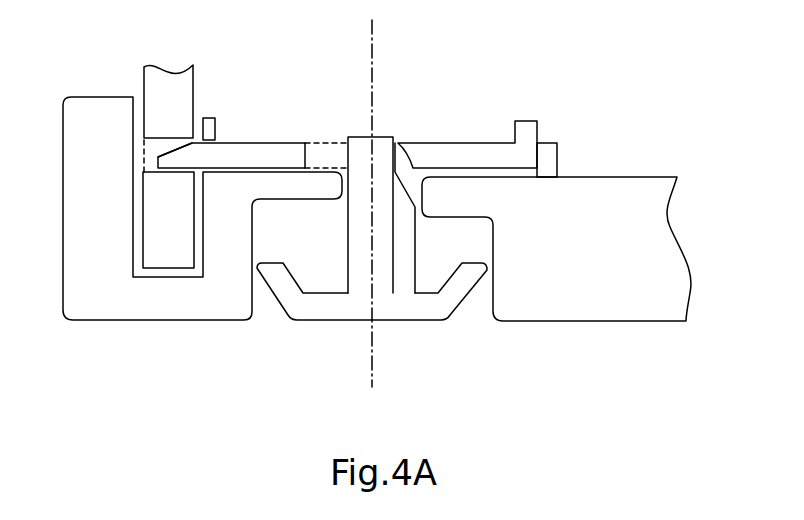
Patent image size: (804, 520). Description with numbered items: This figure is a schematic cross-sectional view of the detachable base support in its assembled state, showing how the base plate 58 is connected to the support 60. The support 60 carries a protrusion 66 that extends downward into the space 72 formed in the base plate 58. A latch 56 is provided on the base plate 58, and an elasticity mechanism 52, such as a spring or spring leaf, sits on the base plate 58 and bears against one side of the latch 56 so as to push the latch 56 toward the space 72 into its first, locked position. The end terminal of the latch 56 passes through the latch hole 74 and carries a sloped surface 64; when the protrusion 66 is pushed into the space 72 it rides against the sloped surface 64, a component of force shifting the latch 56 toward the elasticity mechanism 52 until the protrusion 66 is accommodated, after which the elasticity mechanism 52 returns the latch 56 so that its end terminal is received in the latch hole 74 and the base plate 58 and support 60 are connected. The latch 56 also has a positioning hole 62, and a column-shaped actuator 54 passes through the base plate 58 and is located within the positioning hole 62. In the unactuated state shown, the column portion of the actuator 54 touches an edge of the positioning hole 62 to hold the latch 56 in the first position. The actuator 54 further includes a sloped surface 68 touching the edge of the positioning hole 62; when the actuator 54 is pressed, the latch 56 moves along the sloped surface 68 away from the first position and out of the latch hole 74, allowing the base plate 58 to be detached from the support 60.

The elasticity mechanism 52 is at (558, 143).
The actuator 54 is at (363, 275).
The latch 56 is at (452, 157).
The base plate 58 is at (113, 299).
The support 60 is at (148, 56).
The positioning hole 62 is at (322, 130).
The sloped surface 64 is at (188, 141).
The protrusion 66 is at (170, 85).
The sloped surface 68 is at (404, 180).
The space 72 is at (140, 227).
The latch hole 74 is at (165, 156).